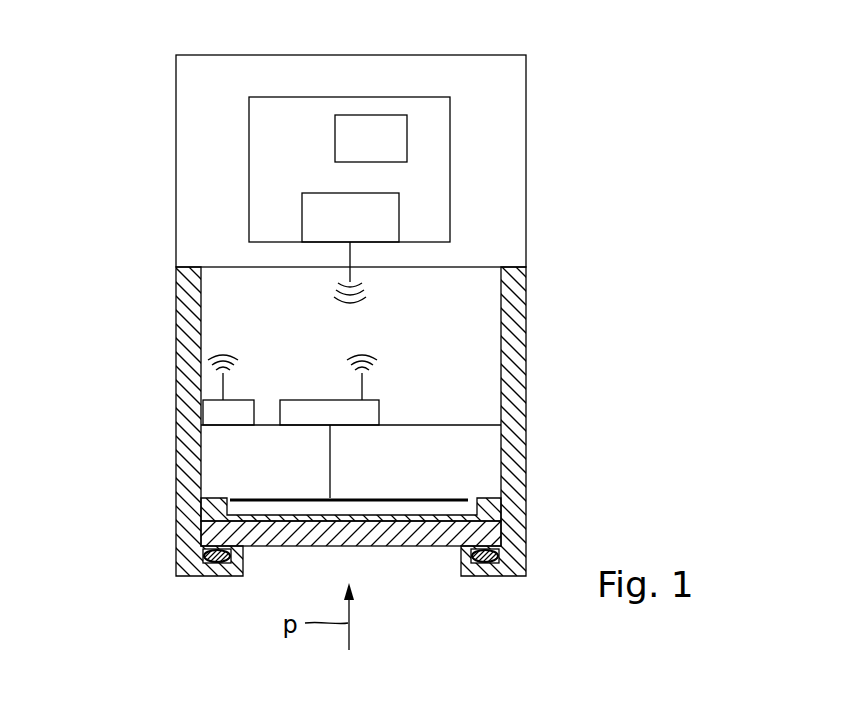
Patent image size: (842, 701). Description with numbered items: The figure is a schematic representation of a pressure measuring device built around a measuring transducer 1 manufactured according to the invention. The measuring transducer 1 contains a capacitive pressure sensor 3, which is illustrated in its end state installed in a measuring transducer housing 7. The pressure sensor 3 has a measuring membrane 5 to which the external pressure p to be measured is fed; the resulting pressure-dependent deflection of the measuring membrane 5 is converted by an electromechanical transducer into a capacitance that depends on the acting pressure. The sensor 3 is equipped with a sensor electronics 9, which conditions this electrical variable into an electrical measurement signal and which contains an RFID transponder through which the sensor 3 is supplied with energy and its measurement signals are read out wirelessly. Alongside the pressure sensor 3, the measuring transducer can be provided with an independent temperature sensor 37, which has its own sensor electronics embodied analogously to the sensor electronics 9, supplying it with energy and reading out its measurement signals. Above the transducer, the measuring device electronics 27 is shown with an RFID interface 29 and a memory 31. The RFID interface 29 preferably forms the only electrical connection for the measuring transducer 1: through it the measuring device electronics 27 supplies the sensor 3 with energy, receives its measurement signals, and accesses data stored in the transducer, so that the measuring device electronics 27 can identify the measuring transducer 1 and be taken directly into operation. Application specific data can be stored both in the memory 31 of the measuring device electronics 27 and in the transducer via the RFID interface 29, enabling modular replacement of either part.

The measuring transducer 1 is at (106, 340).
The capacitive pressure sensor 3 is at (434, 404).
The measuring membrane 5 is at (415, 535).
The measuring transducer housing 7 is at (517, 483).
The sensor electronics 9 is at (313, 412).
The measuring device electronics 27 is at (302, 125).
The RFID interface 29 is at (334, 231).
The memory 31 is at (359, 150).
The temperature sensor 37 is at (242, 412).